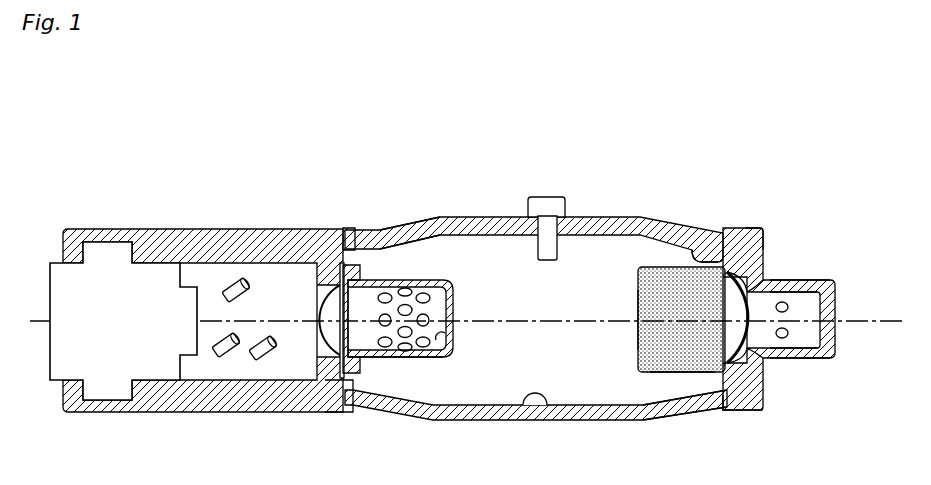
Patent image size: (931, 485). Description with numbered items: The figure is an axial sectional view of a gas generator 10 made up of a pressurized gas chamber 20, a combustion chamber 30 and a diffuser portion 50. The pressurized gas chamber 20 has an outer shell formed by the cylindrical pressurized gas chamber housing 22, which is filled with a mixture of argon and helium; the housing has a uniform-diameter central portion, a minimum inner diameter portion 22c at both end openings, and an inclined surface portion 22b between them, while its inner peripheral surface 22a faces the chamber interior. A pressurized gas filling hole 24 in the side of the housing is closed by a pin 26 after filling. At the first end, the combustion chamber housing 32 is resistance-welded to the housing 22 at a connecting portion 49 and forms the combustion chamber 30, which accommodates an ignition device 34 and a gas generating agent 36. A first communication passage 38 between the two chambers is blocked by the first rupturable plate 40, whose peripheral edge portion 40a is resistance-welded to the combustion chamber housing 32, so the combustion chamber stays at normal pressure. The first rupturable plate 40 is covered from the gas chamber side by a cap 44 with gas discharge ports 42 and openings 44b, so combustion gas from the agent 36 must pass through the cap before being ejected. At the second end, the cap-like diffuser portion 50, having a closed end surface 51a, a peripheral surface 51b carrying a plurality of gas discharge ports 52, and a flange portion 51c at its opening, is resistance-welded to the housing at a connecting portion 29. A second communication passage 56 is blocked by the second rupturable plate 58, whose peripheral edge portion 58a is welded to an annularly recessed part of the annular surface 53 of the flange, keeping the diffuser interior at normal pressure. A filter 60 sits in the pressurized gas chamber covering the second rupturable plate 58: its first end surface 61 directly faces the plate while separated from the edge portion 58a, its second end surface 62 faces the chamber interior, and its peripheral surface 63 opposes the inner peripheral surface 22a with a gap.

The gas generator 10 is at (604, 198).
The pressurized gas chamber 20 is at (526, 369).
The pressurized gas chamber housing 22 is at (536, 323).
The inner peripheral surface 22a is at (545, 406).
The inclined surface portion 22b is at (398, 220).
The minimum inner diameter portion 22c is at (717, 408).
The pressurized gas filling hole 24 is at (539, 237).
The pin 26 is at (535, 219).
The connecting portion 29 is at (740, 410).
The combustion chamber 30 is at (244, 333).
The combustion chamber housing 32 is at (210, 237).
The ignition device 34 is at (153, 358).
The gas generating agent 36 is at (210, 355).
The first communication passage 38 is at (323, 298).
The first rupturable plate 40 is at (335, 365).
The peripheral edge portion 40a is at (350, 378).
The gas discharge ports 42 is at (423, 360).
The cap 44 is at (429, 355).
The gas passage holes 44b is at (434, 338).
The connecting portion 49 is at (345, 233).
The diffuser portion 50 is at (780, 320).
The closed end surface 51a is at (807, 288).
The peripheral surface 51b is at (810, 360).
The flange portion 51c is at (755, 229).
The gas discharge ports 52 is at (783, 357).
The annular surface 53 is at (692, 247).
The second communication passage 56 is at (803, 328).
The second rupturable plate 58 is at (752, 328).
The peripheral edge portion 58a is at (747, 273).
The filter 60 is at (651, 319).
The first end surface 61 is at (753, 405).
The second end surface 62 is at (636, 338).
The peripheral surface 63 is at (663, 373).